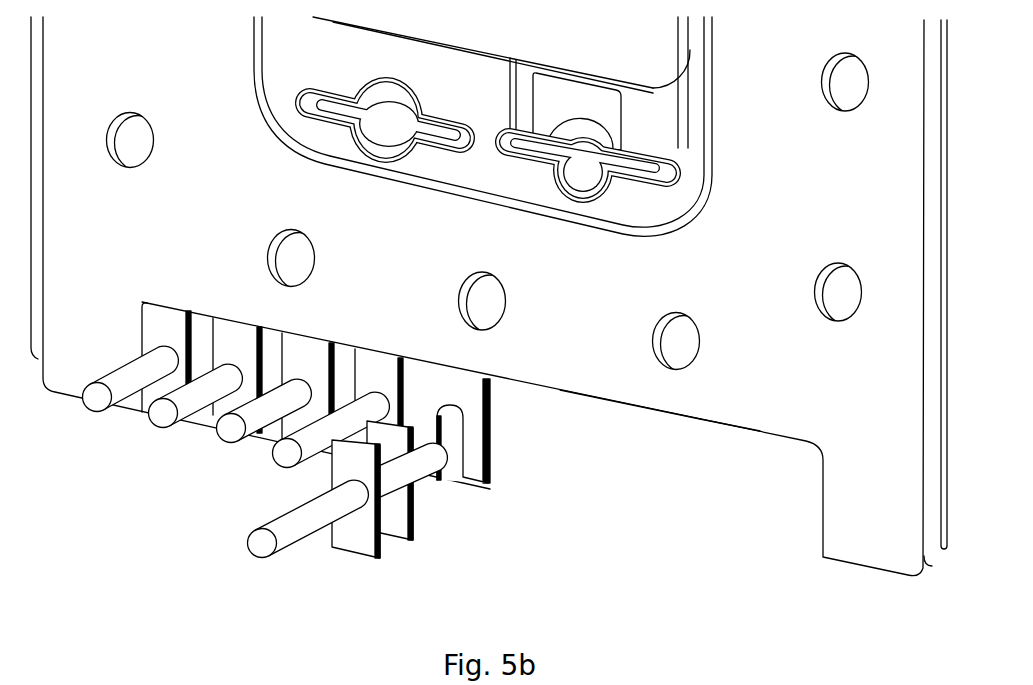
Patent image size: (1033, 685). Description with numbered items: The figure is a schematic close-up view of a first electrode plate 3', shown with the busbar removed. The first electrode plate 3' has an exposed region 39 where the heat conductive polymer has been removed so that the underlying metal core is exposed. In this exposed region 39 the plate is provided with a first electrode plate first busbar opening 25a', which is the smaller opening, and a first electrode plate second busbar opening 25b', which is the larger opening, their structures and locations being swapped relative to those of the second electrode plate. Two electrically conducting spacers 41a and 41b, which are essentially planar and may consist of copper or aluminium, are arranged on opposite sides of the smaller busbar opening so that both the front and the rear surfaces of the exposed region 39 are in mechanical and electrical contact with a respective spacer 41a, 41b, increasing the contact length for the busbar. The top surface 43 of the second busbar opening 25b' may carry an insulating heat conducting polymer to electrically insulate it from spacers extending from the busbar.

The first electrode plate 3' is at (489, 296).
The exposed region 39 is at (472, 403).
The top surface 43 is at (692, 425).
The first electrode plate first busbar opening 25a' is at (483, 472).
The first electrode plate second busbar opening 25b' is at (713, 479).
The spacer 41a is at (345, 541).
The spacer 41b is at (415, 532).